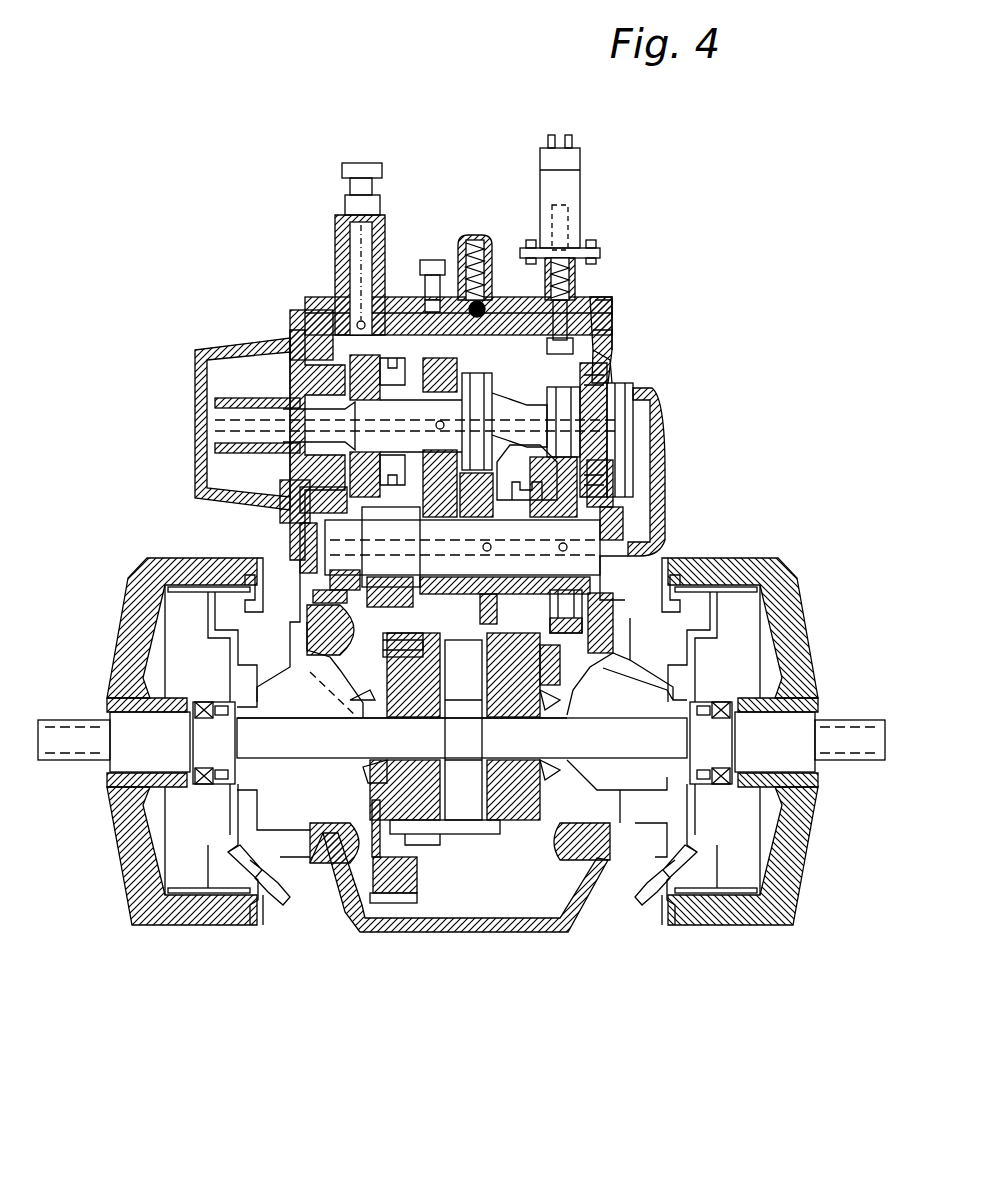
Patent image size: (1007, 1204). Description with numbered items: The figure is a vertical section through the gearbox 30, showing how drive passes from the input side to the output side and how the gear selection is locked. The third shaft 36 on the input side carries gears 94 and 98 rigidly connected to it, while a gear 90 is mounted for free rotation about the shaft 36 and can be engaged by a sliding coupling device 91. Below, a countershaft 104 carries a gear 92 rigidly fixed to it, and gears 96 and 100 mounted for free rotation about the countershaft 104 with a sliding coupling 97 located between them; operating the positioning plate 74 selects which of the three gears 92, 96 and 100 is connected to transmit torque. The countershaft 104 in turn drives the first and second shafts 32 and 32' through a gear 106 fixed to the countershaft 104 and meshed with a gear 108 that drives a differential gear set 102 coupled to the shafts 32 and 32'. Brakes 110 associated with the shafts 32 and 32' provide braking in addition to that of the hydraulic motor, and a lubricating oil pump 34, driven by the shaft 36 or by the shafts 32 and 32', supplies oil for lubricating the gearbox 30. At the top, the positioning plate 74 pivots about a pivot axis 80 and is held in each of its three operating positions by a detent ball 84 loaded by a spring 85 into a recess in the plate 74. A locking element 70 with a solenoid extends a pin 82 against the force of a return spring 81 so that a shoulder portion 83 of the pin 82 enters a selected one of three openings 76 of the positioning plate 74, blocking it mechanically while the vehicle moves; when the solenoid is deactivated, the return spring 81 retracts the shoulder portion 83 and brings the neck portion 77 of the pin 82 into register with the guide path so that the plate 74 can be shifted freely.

The gearbox 30 is at (205, 528).
The first shaft 32 is at (114, 767).
The second shaft 32' is at (810, 766).
The lubricating oil pump 34 is at (657, 420).
The third shaft 36 is at (290, 427).
The locking element 70 is at (582, 195).
The positioning plate 74 is at (505, 300).
The openings 76 is at (612, 312).
The neck portion 77 is at (608, 340).
The pivot axis 80 is at (355, 268).
The return spring 81 is at (578, 245).
The pin 82 is at (600, 342).
The shoulder portion 83 is at (580, 300).
The ball 84 is at (470, 300).
The spring 85 is at (478, 235).
The gear 90 is at (425, 345).
The sliding coupling device 91 is at (320, 378).
The gear 92 is at (362, 612).
The gear 94 is at (480, 373).
The gear 96 is at (478, 626).
The sliding coupling 97 is at (546, 490).
The gear 98 is at (615, 376).
The gear 100 is at (590, 675).
The differential gear set 102 is at (537, 813).
The countershaft 104 is at (640, 560).
The gear 106 is at (320, 462).
The gear 108 is at (400, 903).
The brakes 110 is at (200, 928).